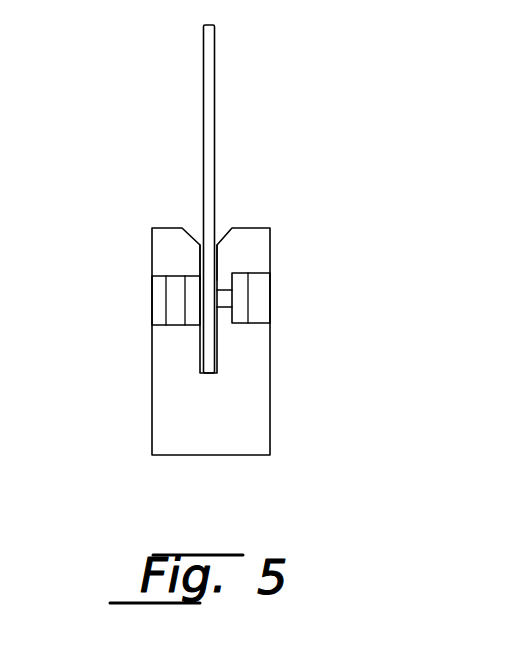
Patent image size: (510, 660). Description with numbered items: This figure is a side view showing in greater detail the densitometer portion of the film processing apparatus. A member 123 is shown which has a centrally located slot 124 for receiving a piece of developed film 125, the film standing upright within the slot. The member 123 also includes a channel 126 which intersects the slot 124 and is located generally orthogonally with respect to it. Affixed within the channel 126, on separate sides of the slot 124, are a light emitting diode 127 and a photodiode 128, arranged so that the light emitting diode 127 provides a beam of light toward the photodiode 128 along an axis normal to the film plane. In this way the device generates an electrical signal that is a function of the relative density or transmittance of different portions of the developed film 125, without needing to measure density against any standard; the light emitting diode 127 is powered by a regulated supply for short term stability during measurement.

The member 123 is at (267, 440).
The slot 124 is at (218, 240).
The developed film 125 is at (208, 68).
The channel 126 is at (260, 283).
The light emitting diode 127 is at (172, 298).
The photodiode 128 is at (242, 308).